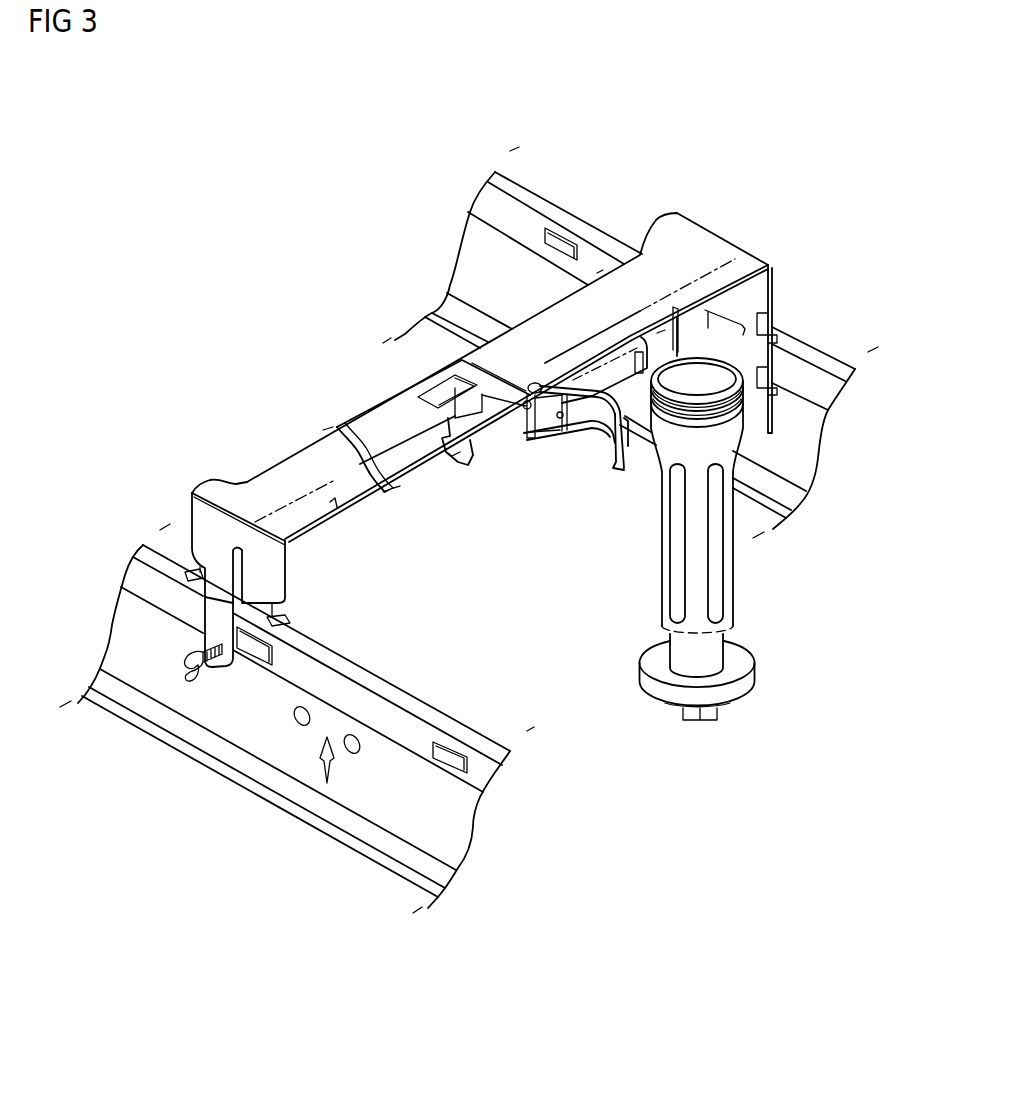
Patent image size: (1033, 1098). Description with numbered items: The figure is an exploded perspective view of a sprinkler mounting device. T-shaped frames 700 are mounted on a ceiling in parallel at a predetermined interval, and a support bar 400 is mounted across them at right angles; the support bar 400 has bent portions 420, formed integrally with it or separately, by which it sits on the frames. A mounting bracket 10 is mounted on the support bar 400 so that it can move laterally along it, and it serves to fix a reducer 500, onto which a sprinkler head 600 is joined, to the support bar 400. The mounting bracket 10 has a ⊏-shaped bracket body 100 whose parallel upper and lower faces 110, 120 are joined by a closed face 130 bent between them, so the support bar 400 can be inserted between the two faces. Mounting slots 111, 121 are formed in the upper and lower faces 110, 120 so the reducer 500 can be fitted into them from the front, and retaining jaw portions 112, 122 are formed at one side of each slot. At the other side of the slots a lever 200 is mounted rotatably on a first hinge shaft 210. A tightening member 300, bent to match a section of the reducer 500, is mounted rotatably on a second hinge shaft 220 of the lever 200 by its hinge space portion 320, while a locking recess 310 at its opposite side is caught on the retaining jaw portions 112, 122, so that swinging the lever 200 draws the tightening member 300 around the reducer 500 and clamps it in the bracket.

The mounting bracket 10 is at (593, 549).
The bracket body 100 is at (429, 410).
The upper face 110 is at (403, 393).
The mounting slot 111 is at (507, 412).
The retaining jaw portion 112 is at (410, 482).
The lower face 120 is at (440, 452).
The mounting slot 121 is at (528, 425).
The retaining jaw portion 122 is at (460, 462).
The closed face 130 is at (398, 405).
The lever 200 is at (570, 435).
The first hinge shaft 210 is at (557, 433).
The second hinge shaft 220 is at (535, 383).
The tightening member 300 is at (607, 362).
The locking recess 310 is at (583, 467).
The hinge space portion 320 is at (597, 420).
The support bar 400 is at (285, 470).
The bent portion 420 is at (197, 520).
The reducer 500 is at (725, 574).
The head 600 is at (753, 673).
The T-shaped frame 700 is at (440, 716).